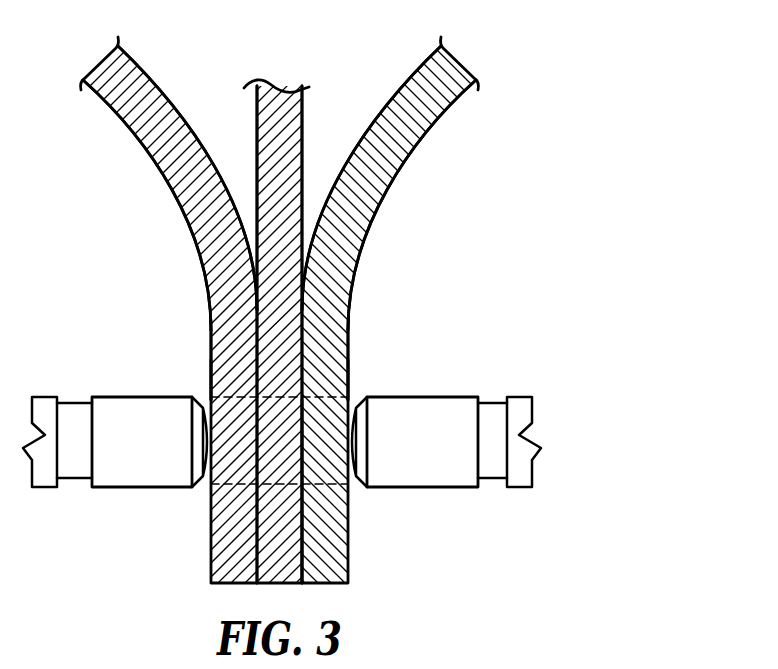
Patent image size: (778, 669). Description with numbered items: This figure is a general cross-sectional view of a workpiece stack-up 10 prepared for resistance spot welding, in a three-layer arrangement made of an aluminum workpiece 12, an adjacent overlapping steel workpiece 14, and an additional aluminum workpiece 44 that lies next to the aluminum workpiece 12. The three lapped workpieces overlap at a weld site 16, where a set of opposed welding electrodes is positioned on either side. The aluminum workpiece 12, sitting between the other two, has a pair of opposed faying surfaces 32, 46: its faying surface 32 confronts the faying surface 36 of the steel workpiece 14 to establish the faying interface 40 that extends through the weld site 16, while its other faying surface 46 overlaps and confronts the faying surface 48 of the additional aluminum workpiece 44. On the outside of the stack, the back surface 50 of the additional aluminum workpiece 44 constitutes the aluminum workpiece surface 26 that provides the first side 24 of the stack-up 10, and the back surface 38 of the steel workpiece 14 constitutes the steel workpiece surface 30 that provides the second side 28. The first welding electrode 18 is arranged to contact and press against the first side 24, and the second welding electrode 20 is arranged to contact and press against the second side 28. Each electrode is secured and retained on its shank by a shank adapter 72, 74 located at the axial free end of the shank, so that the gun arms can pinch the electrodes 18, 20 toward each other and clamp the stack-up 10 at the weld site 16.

The workpiece stack-up 10 is at (193, 580).
The aluminum workpiece 12 is at (282, 100).
The steel workpiece 14 is at (422, 98).
The weld site 16 is at (320, 395).
The first welding electrode 18 is at (115, 456).
The second welding electrode 20 is at (446, 456).
The first side 24 is at (200, 378).
The aluminum workpiece surface 26 is at (208, 350).
The second side 28 is at (362, 387).
The steel workpiece surface 30 is at (350, 367).
The faying surface 32 is at (303, 138).
The faying surface 36 is at (380, 100).
The back surface 38 is at (410, 140).
The faying interface 40 is at (312, 470).
The additional aluminum workpiece 44 is at (128, 86).
The faying surface 46 is at (257, 128).
The faying surface 48 is at (174, 100).
The back surface 50 is at (152, 150).
The shank adapter 72 is at (76, 423).
The shank adapter 74 is at (485, 423).